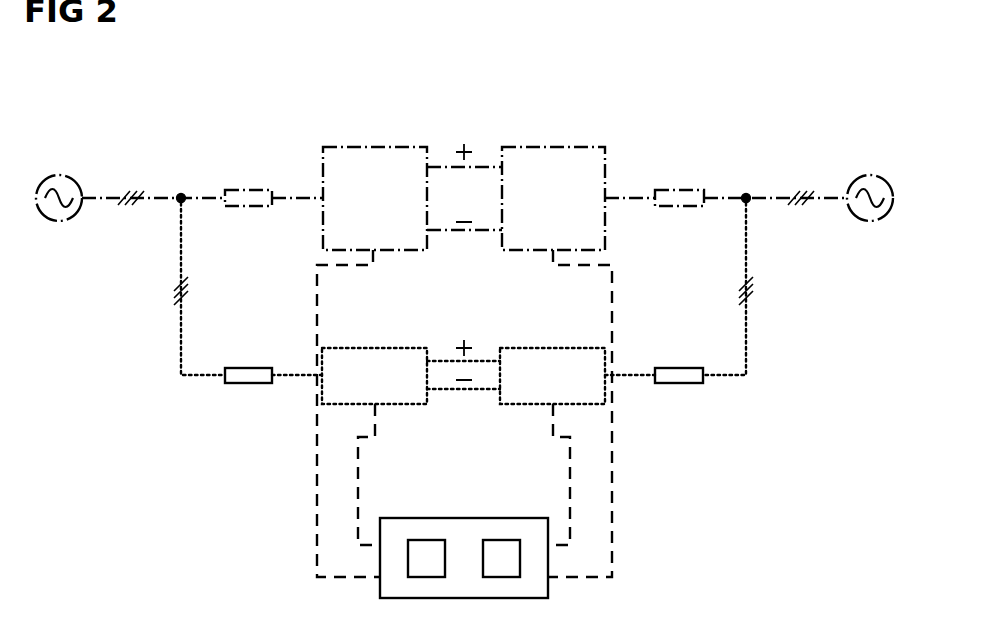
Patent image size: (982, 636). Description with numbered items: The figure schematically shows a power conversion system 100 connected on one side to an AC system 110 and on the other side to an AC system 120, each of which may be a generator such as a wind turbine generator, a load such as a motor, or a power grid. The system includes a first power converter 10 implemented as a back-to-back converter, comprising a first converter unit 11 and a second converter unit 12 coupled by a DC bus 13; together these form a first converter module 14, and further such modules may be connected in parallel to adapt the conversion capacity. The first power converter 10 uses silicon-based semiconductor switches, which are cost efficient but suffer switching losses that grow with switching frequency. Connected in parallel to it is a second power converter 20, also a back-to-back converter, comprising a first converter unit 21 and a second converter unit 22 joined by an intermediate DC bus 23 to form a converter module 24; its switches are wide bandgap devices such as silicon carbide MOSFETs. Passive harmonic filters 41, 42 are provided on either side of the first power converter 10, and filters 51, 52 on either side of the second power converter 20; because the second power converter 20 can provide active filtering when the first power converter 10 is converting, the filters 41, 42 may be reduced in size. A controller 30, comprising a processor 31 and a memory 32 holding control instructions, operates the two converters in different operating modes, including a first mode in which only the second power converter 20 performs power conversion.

The power conversion system 100 is at (812, 90).
The first power converter 10 is at (312, 124).
The first converter unit 11 is at (375, 147).
The second converter unit 12 is at (552, 147).
The DC bus 13 is at (442, 232).
The first converter module 14 is at (632, 160).
The second power converter 20 is at (292, 414).
The first converter unit 21 is at (372, 348).
The second converter unit 22 is at (556, 348).
The intermediate DC bus 23 is at (484, 360).
The converter module 24 is at (645, 385).
The controller 30 is at (465, 518).
The processor 31 is at (425, 540).
The memory 32 is at (505, 540).
The filter 41 is at (248, 190).
The filter 42 is at (679, 190).
The filter 51 is at (249, 367).
The filter 52 is at (680, 367).
The AC system 110 is at (58, 221).
The AC system 120 is at (869, 221).